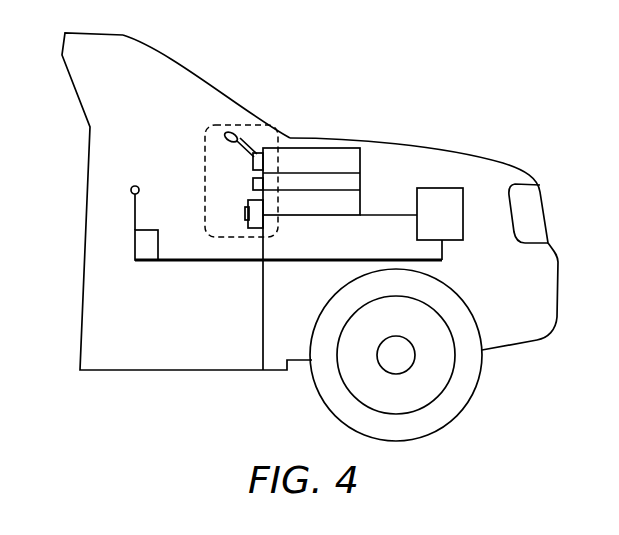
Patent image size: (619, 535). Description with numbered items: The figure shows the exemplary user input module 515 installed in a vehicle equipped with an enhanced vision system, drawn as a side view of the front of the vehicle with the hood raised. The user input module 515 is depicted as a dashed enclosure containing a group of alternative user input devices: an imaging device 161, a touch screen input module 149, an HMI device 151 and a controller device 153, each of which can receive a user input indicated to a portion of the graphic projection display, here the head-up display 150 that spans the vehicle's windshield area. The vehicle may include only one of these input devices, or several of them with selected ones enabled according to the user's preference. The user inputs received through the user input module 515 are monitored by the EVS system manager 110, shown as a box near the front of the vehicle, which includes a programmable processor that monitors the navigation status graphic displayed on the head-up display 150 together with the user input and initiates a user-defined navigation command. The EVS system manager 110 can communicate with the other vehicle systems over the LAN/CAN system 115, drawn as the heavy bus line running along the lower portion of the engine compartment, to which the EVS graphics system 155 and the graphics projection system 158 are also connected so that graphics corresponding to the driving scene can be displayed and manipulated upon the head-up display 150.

The EVS system manager 110 is at (450, 217).
The LAN/CAN system 115 is at (177, 263).
The touch screen input module 149 is at (250, 163).
The head-up display 150 is at (213, 87).
The HMI device 151 is at (250, 186).
The controller device 153 is at (250, 145).
The EVS graphics system 155 is at (143, 250).
The graphics projection system 158 is at (131, 190).
The imaging device 161 is at (245, 223).
The user input module 515 is at (292, 136).